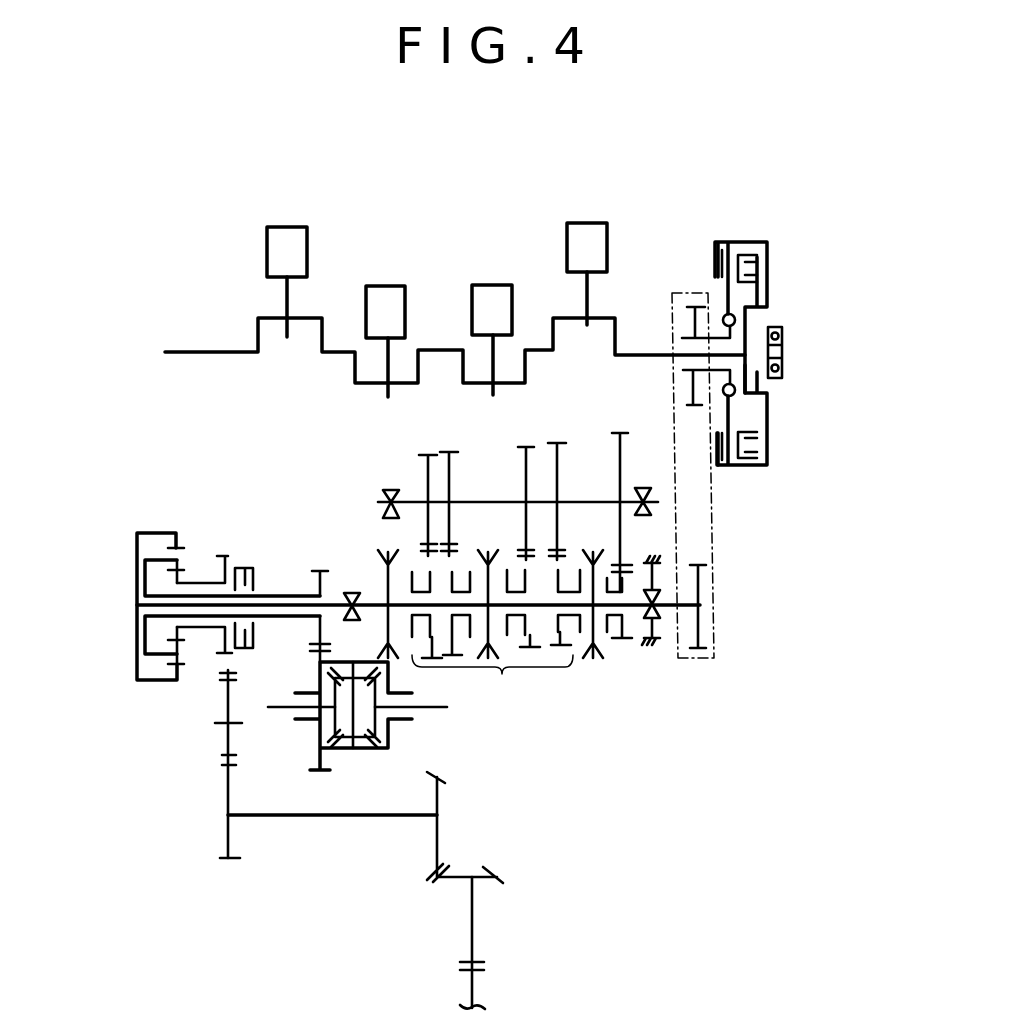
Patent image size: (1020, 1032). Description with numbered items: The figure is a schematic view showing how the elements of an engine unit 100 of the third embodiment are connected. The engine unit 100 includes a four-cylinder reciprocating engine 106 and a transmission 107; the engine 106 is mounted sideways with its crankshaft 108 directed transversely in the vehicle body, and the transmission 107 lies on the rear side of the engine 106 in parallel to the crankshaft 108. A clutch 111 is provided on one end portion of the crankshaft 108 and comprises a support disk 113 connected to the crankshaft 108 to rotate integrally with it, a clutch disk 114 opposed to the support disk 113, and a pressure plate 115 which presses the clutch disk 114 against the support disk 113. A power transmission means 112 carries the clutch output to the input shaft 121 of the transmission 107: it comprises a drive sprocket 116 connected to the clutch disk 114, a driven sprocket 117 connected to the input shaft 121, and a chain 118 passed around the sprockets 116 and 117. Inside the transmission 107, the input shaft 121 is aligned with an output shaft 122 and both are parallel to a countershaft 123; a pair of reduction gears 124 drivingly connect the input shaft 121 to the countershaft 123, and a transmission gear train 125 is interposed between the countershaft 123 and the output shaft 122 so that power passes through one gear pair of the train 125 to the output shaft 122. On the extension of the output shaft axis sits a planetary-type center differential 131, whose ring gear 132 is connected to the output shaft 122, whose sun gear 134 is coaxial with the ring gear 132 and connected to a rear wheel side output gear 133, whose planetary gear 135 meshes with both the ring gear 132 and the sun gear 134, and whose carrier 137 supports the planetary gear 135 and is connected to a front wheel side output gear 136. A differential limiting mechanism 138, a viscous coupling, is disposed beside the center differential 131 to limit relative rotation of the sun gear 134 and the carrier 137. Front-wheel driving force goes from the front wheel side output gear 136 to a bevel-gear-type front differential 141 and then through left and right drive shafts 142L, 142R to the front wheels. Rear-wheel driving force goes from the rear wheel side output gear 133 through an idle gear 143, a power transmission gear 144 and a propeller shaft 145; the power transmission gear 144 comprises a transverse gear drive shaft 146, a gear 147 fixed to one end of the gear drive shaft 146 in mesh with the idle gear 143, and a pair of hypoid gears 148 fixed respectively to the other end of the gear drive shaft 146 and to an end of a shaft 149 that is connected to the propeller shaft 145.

The engine unit 100 is at (122, 433).
The four-cylinder reciprocating engine 106 is at (495, 242).
The transmission 107 is at (558, 683).
The crankshaft 108 is at (540, 355).
The clutch 111 is at (752, 229).
The power transmission means 112 is at (720, 518).
The support disk 113 is at (768, 282).
The clutch disk 114 is at (727, 258).
The pressure plate 115 is at (752, 268).
The drive sprocket 116 is at (690, 292).
The driven sprocket 117 is at (707, 650).
The chain 118 is at (718, 498).
The input shaft 121 is at (667, 607).
The output shaft 122 is at (372, 602).
The countershaft 123 is at (484, 500).
The reduction gears 124 is at (623, 640).
The transmission gear train 125 is at (505, 630).
The center differential 131 is at (182, 519).
The ring gear 132 is at (180, 547).
The rear wheel side output gear 133 is at (213, 680).
The sun gear 134 is at (188, 636).
The planetary gear 135 is at (183, 557).
The front wheel side output gear 136 is at (318, 565).
The carrier 137 is at (138, 570).
The differential limiting mechanism 138 is at (240, 650).
The front differential 141 is at (397, 727).
The left drive shaft 142L is at (277, 712).
The right drive shaft 142R is at (435, 707).
The idle gear 143 is at (225, 737).
The power transmission gear 144 is at (367, 836).
The propeller shaft 145 is at (477, 983).
The gear drive shaft 146 is at (307, 820).
The gear 147 is at (225, 857).
The hypoid gears 148 is at (460, 875).
The shaft 149 is at (473, 913).